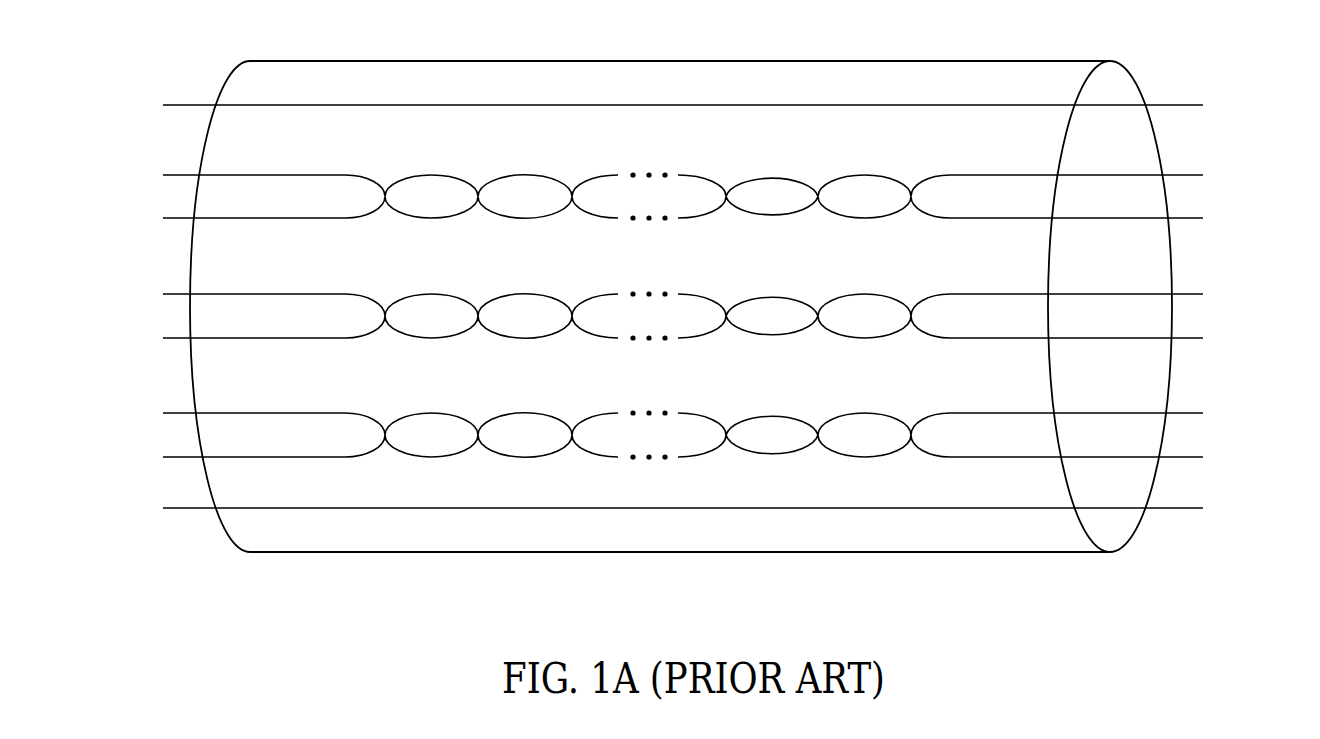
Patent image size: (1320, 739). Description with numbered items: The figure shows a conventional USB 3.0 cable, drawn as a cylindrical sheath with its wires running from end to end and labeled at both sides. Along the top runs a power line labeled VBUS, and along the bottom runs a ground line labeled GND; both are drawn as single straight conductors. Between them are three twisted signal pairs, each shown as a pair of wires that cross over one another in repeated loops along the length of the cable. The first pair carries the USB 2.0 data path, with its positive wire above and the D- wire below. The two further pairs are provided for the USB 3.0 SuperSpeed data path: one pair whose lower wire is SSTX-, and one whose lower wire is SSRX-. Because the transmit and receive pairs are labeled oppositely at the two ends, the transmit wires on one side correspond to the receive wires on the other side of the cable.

The VBUS power conductor VBUS is at (682, 104).
The USB 2.0 data path signal D- is at (683, 215).
The SuperSpeed transmit signal SSTX- is at (682, 334).
The SuperSpeed receive signal SSRX- is at (682, 453).
The ground conductor GND is at (684, 508).